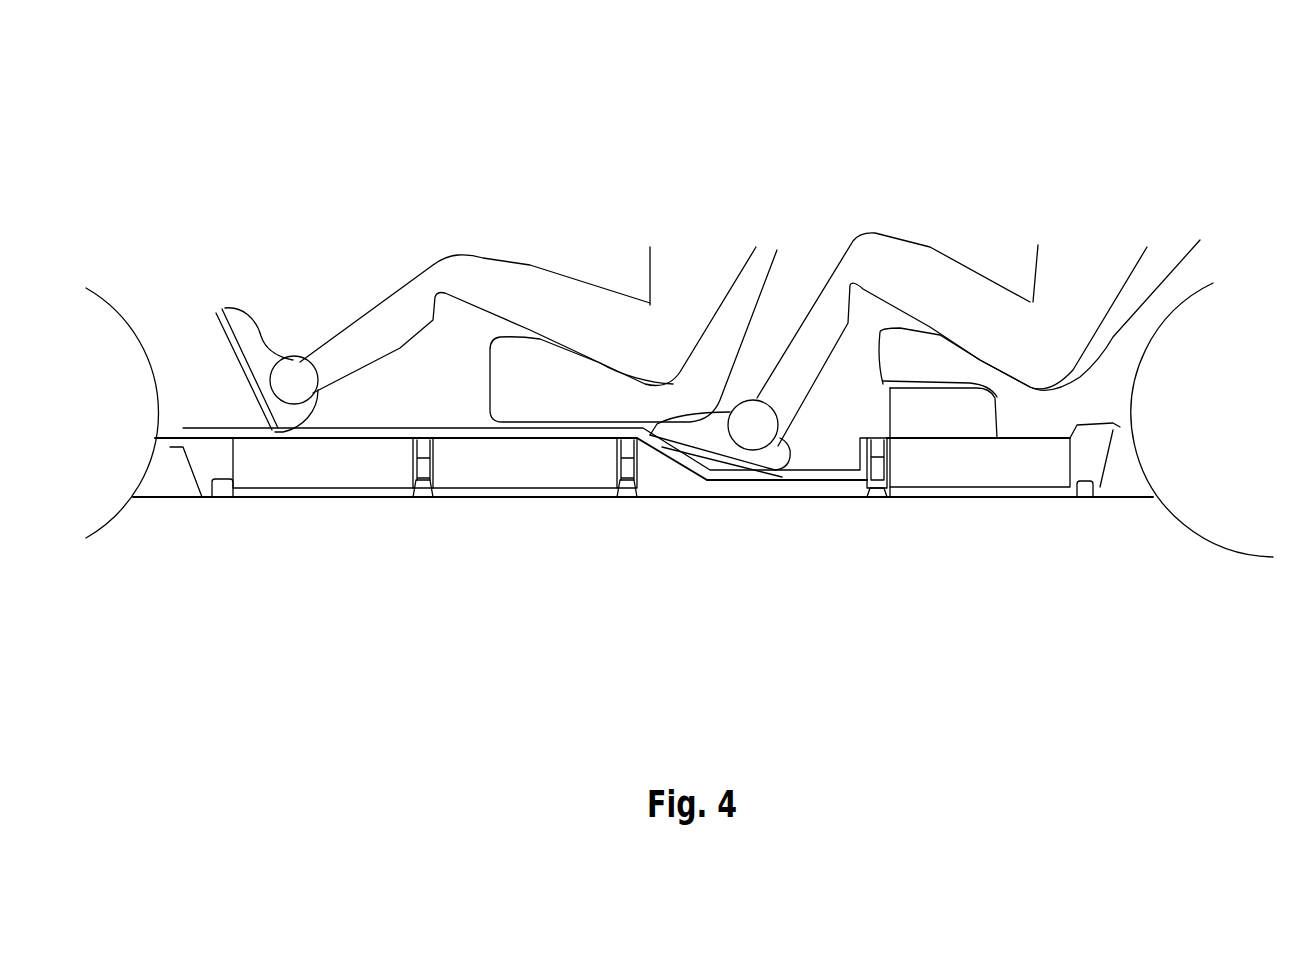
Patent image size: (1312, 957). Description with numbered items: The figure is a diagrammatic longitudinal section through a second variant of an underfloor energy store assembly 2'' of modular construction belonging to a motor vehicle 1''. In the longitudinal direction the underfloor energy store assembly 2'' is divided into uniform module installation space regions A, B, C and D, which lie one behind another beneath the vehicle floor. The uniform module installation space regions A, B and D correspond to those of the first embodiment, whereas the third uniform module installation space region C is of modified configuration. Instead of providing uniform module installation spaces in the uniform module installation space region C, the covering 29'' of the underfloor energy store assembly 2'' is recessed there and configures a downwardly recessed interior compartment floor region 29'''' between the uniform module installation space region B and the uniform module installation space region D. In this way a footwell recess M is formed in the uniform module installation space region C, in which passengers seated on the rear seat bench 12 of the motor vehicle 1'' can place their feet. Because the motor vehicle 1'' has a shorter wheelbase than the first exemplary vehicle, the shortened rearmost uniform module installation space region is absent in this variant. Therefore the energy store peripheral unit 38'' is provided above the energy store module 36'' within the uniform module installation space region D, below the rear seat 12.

The motor vehicle 1'' is at (679, 324).
The underfloor energy store assembly 2'' is at (643, 511).
The covering 29'' is at (438, 430).
The downwardly recessed interior compartment floor region 29'''' is at (787, 534).
The energy store peripheral unit 38'' is at (879, 491).
The energy store module 36'' is at (980, 491).
The rear seat bench 12 is at (868, 380).
The footwell recess M is at (801, 448).
The uniform module installation space region A is at (317, 540).
The uniform module installation space region B is at (520, 543).
The uniform module installation space region C is at (732, 542).
The uniform module installation space region D is at (933, 543).